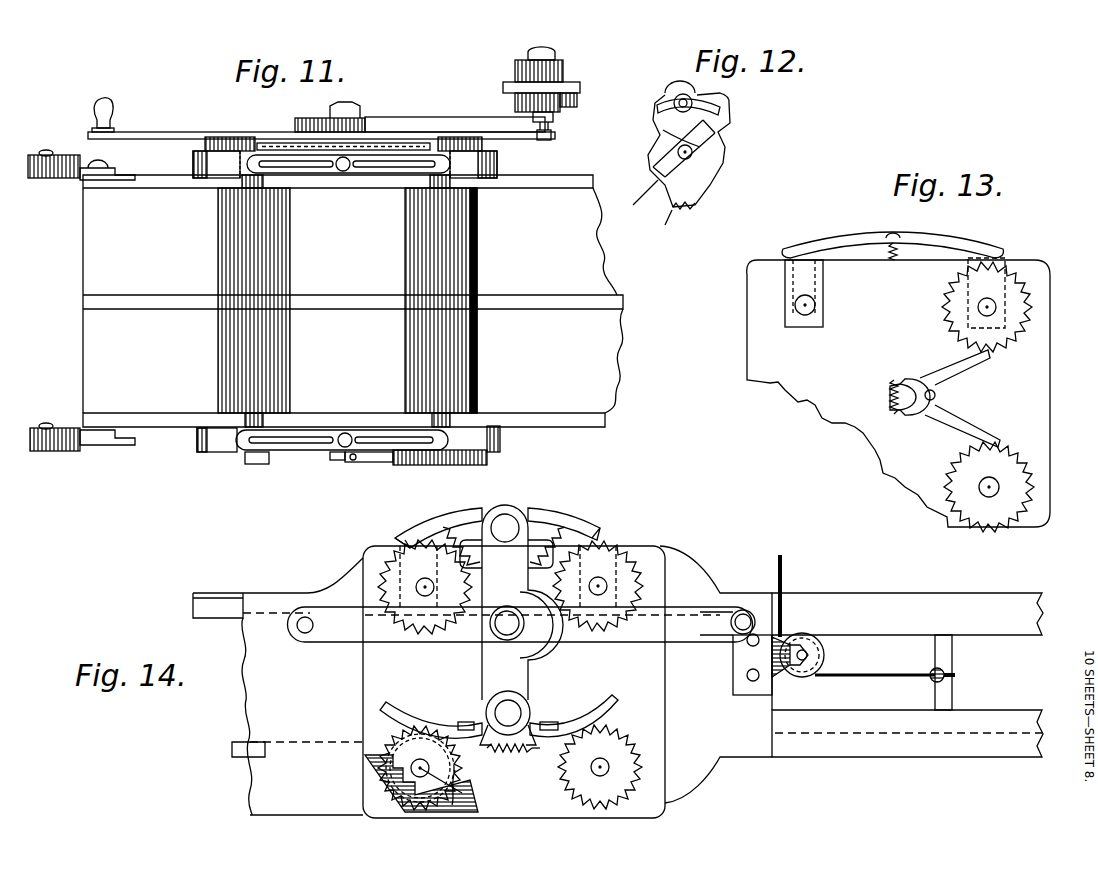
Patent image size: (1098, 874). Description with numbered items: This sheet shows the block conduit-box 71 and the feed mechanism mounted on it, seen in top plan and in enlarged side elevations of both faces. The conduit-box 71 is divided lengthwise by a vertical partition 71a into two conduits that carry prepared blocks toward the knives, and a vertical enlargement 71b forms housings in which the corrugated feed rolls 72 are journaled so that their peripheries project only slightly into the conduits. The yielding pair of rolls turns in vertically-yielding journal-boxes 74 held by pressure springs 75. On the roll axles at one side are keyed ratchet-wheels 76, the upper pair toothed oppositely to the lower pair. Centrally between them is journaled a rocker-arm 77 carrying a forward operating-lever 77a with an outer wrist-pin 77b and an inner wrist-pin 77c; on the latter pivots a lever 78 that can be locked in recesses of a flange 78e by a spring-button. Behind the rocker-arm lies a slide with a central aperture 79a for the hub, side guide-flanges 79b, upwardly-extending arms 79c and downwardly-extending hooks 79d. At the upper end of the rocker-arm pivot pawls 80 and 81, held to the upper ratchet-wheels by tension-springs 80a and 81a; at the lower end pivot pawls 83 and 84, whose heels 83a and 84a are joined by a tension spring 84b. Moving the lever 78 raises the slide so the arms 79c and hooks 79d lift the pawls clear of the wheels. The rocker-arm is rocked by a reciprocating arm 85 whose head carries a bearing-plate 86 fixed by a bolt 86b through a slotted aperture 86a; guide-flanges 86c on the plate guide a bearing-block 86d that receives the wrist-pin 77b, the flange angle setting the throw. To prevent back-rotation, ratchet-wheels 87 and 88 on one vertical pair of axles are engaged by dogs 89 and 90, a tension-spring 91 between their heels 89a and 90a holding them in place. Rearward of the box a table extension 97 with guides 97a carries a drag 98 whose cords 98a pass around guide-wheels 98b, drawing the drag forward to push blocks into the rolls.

In FIG. 14, the conduit-box 71 is at (245, 702).
In FIG. 11, the vertical partition 71a is at (128, 305).
In FIG. 14, the vertical enlargement of the conduit-box 71b is at (338, 590).
In FIG. 11, the feed rolls 72 is at (290, 268).
In FIG. 14, the feed rolls 72 is at (421, 773).
In FIG. 11, the journal-boxes 74 is at (235, 170).
In FIG. 14, the journal-boxes 74 is at (617, 562).
In FIG. 11, the pressure springs 75 is at (305, 174).
In FIG. 11, the ratchet-wheel 76 is at (232, 137).
In FIG. 14, the ratchet-wheel 76 is at (388, 570).
In FIG. 11, the rocker-arm 77 is at (368, 118).
In FIG. 14, the rocker-arm 77 is at (522, 685).
In FIG. 11, the operating-lever 77a is at (440, 128).
In FIG. 14, the operating-lever 77a is at (348, 636).
In FIG. 11, the wrist-pin 77b is at (553, 116).
In FIG. 14, the wrist-pin 77b is at (298, 630).
In FIG. 11, the wrist-pin 77c is at (546, 138).
In FIG. 11, the lever 78 is at (488, 139).
In FIG. 11, the flange 78e is at (305, 118).
In FIG. 14, the flange 78e is at (548, 637).
In FIG. 14, the central aperture of the slide 79a is at (466, 734).
In FIG. 14, the guide-flanges 79b is at (484, 655).
In FIG. 14, the upwardly-extending arms 79c is at (462, 540).
In FIG. 14, the downwardly-extending hooks 79d is at (548, 733).
In FIG. 11, the pawl 80 is at (275, 138).
In FIG. 14, the pawl 80 is at (556, 522).
In FIG. 14, the tension-spring 80a is at (598, 538).
In FIG. 11, the pawl 81 is at (415, 140).
In FIG. 14, the pawl 81 is at (458, 522).
In FIG. 14, the tension-spring 81a is at (442, 535).
In FIG. 14, the pawl 83 is at (585, 708).
In FIG. 14, the heel 83a is at (536, 765).
In FIG. 14, the pawl 84 is at (448, 710).
In FIG. 14, the heel 84a is at (504, 763).
In FIG. 14, the tension spring 84b is at (494, 791).
In FIG. 12, the reciprocating arm 85 is at (700, 205).
In FIG. 11, the bearing-plate 86 is at (568, 86).
In FIG. 12, the bearing-plate 86 is at (720, 127).
In FIG. 11, the slotted aperture 86a is at (332, 458).
In FIG. 12, the slotted aperture 86a is at (727, 108).
In FIG. 12, the bolt 86b is at (668, 90).
In FIG. 11, the guide-flanges 86c is at (578, 97).
In FIG. 12, the guide-flanges 86c is at (655, 212).
In FIG. 12, the bearing-block 86d is at (705, 145).
In FIG. 11, the ratchet-wheel 87 is at (432, 466).
In FIG. 13, the ratchet-wheel 87 is at (955, 313).
In FIG. 13, the ratchet-wheel 88 is at (1018, 468).
In FIG. 13, the dog 89 is at (962, 386).
In FIG. 11, the heel 89a is at (355, 462).
In FIG. 13, the heel 89a is at (912, 375).
In FIG. 13, the dog 90 is at (958, 423).
In FIG. 13, the heel 90a is at (895, 408).
In FIG. 13, the tension-spring 91 is at (890, 398).
In FIG. 14, the table extension 97 is at (940, 757).
In FIG. 14, the guides 97a is at (1001, 636).
In FIG. 14, the drag 98 is at (933, 652).
In FIG. 11, the cords 98a is at (78, 180).
In FIG. 14, the cords 98a is at (835, 677).
In FIG. 11, the guide-wheels 98b is at (35, 162).
In FIG. 14, the guide-wheels 98b is at (808, 642).